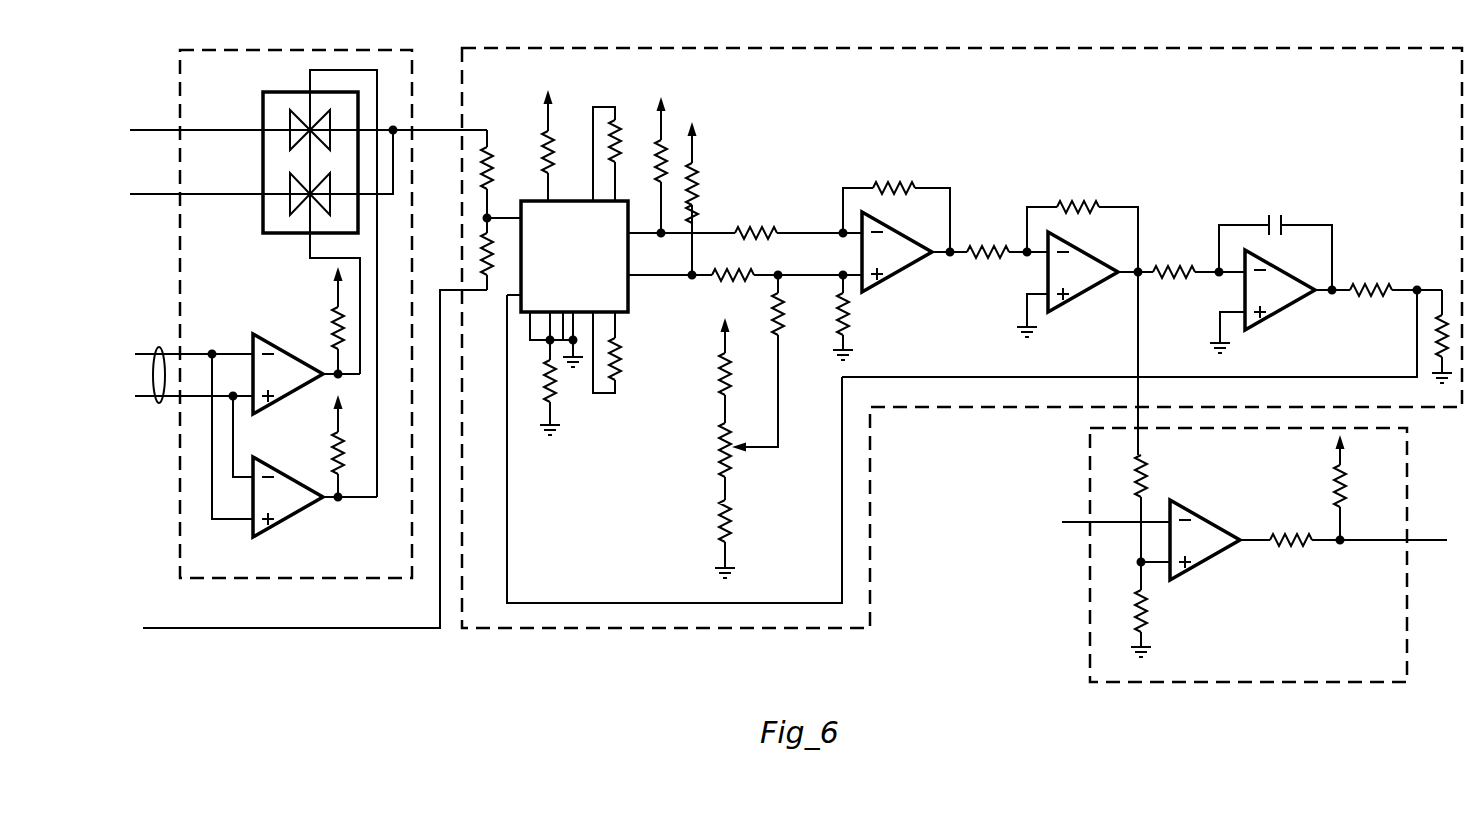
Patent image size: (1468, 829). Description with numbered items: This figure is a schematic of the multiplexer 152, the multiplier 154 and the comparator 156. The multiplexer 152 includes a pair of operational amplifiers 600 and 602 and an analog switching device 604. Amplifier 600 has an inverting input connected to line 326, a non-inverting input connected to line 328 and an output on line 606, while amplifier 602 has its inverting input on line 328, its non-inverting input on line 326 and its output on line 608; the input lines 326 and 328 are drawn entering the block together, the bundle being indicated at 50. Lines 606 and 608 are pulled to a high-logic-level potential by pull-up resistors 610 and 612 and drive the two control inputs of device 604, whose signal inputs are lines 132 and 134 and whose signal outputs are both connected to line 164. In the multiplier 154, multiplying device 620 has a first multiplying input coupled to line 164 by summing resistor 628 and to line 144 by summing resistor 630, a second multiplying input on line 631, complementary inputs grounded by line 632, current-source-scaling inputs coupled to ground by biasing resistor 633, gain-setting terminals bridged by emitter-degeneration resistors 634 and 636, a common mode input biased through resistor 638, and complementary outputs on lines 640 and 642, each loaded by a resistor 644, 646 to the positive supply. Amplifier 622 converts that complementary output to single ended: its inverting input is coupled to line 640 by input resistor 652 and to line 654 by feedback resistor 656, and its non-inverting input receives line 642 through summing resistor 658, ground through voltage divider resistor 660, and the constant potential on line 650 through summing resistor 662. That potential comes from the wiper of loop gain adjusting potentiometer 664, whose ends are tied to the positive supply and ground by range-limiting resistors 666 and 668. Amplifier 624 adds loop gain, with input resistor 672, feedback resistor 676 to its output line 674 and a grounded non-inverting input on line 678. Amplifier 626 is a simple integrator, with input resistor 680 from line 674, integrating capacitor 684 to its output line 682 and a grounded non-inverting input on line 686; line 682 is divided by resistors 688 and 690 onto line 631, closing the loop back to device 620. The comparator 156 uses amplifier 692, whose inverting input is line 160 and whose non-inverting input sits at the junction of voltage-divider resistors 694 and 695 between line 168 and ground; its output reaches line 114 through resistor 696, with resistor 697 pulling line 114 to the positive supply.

The line 132 is at (152, 130).
The line 134 is at (144, 194).
The analog switching device 604 is at (263, 110).
The line 164 is at (436, 128).
The line 606 is at (303, 258).
The operational amplifier 600 is at (254, 336).
The pull-up resistor 610 is at (331, 328).
The pull-up resistor 612 is at (334, 454).
The operational amplifier 602 is at (284, 522).
The line 608 is at (358, 500).
The line 326 is at (148, 354).
The line 328 is at (150, 398).
The twisted pair cable 50 is at (165, 403).
The multiplexer 152 is at (290, 578).
The line 144 is at (170, 630).
The summing resistor 628 is at (494, 172).
The summing resistor 630 is at (479, 252).
The multiplying device 620 is at (557, 260).
The biasing resistor 638 is at (547, 131).
The emitter-degeneration resistor 636 is at (617, 128).
The load resistor 644 is at (656, 182).
The load resistor 646 is at (704, 178).
The line 640 is at (698, 218).
The line 642 is at (657, 275).
The input resistor 652 is at (764, 225).
The summing resistor 658 is at (737, 270).
The line 632 is at (548, 340).
The biasing resistor 633 is at (557, 388).
The emitter-degeneration resistor 634 is at (624, 356).
The line 631 is at (507, 486).
The range-limiting resistor 666 is at (718, 387).
The loop gain adjusting potentiometer 664 is at (718, 464).
The range-limiting resistor 668 is at (718, 540).
The summing resistor 662 is at (784, 316).
The voltage divider resistor 660 is at (852, 316).
The line 650 is at (842, 374).
The feedback resistor 656 is at (903, 182).
The line 654 is at (952, 198).
The operational amplifier 622 is at (904, 234).
The input resistor 672 is at (990, 240).
The line 678 is at (1026, 304).
The feedback resistor 676 is at (1082, 202).
The line 674 is at (1140, 208).
The operational amplifier 624 is at (1098, 258).
The input resistor 680 is at (1182, 264).
The integrating capacitor 684 is at (1274, 214).
The line 682 is at (1336, 248).
The operational amplifier 626 is at (1288, 274).
The line 686 is at (1218, 322).
The voltage divider resistor 688 is at (1386, 286).
The voltage divider resistor 690 is at (1446, 302).
The line 168 is at (1138, 341).
The voltage-divider resistor 694 is at (1150, 480).
The operational amplifier 692 is at (1216, 522).
The voltage divider resistor 696 is at (1294, 534).
The voltage divider resistor 697 is at (1348, 490).
The voltage-divider resistor 695 is at (1152, 604).
The line 160 is at (1072, 522).
The line 114 is at (1418, 542).
The comparator 156 is at (1215, 682).
The multiplier 154 is at (578, 628).